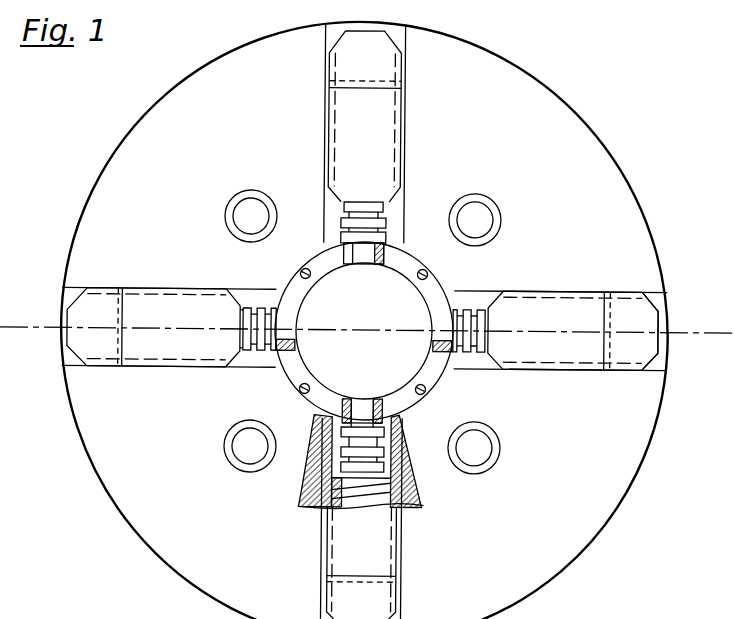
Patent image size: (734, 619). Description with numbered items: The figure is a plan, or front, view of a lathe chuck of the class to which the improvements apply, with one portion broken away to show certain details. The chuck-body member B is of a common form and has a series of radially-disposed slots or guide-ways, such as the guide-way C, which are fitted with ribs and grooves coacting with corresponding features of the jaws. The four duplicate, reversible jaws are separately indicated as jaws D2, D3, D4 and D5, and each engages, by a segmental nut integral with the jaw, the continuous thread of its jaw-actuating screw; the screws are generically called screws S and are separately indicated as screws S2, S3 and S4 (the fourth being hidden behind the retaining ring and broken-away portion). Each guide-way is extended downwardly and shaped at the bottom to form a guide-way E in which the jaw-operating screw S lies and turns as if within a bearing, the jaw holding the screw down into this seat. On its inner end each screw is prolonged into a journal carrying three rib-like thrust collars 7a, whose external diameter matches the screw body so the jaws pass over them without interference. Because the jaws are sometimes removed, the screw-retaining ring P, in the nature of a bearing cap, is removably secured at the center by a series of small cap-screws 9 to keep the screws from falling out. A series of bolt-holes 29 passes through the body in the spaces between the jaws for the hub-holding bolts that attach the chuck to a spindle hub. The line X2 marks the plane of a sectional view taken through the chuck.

The chuck-body member B is at (367, 309).
The guide-way C is at (661, 356).
The section line X2- X2 is at (46, 329).
The bolt-holes 29 is at (505, 246).
The cap-screws 9 is at (412, 406).
The jaw D2 is at (157, 312).
The jaw D3 is at (380, 145).
The jaw D4 is at (545, 312).
The jaw D5 is at (383, 538).
The jaw-actuating screw S2 is at (249, 356).
The jaw-actuating screw S3 is at (386, 216).
The jaw-actuating screw S4 is at (478, 354).
The jaw-operating screw S is at (301, 494).
The thrust collars 7a is at (257, 318).
The screw-retaining ring P is at (415, 410).
The guide-way for the jaw-operating screw E is at (421, 485).